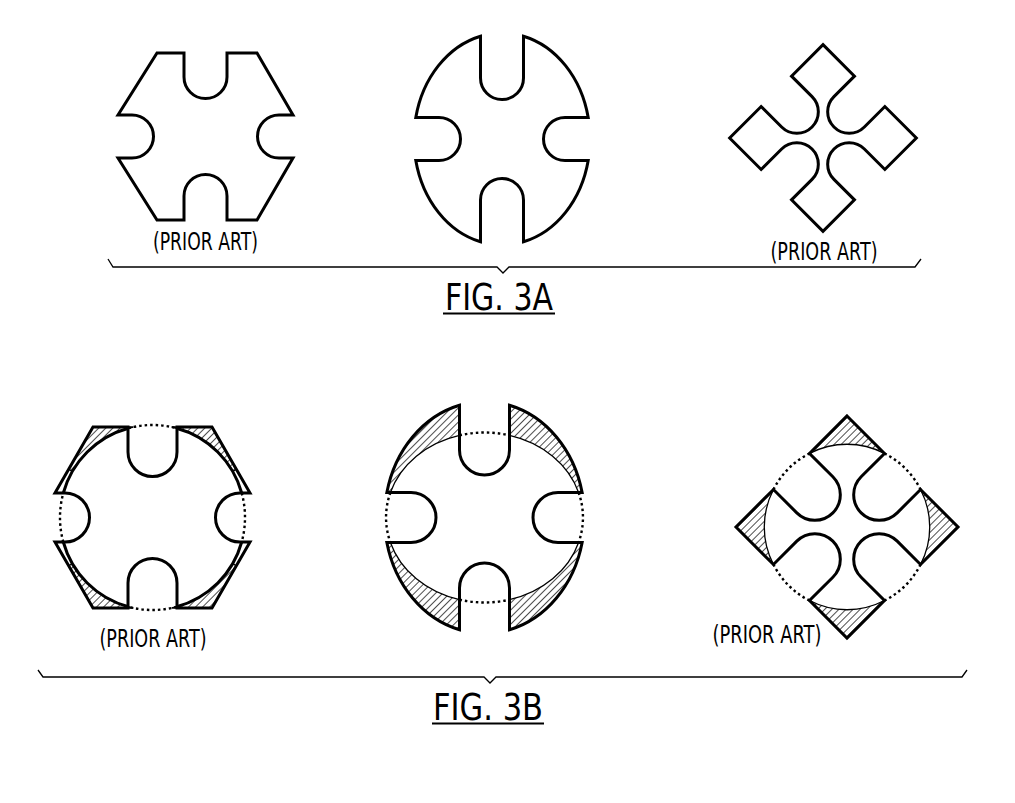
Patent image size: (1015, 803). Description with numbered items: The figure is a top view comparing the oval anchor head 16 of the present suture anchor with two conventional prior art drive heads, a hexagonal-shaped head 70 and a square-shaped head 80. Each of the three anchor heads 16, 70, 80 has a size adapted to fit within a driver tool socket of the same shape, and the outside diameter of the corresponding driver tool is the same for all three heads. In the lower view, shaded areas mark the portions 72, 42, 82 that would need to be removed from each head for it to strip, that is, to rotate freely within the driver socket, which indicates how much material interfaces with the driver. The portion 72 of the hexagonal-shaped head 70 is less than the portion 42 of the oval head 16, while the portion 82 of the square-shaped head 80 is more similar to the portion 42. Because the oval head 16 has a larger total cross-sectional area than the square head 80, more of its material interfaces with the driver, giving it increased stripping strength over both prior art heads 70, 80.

In FIG. 3A, the anchor head 16 is at (452, 50).
In FIG. 3B, the anchor head 16 is at (499, 518).
In FIG. 3B, the portion 42 is at (414, 432).
In FIG. 3A, the hexagonal-shaped head 70 is at (142, 76).
In FIG. 3B, the hexagonal-shaped head 70 is at (170, 517).
In FIG. 3B, the portion 72 is at (90, 429).
In FIG. 3A, the square-shaped head 80 is at (807, 60).
In FIG. 3B, the square-shaped head 80 is at (791, 520).
In FIG. 3B, the portion 82 is at (866, 431).